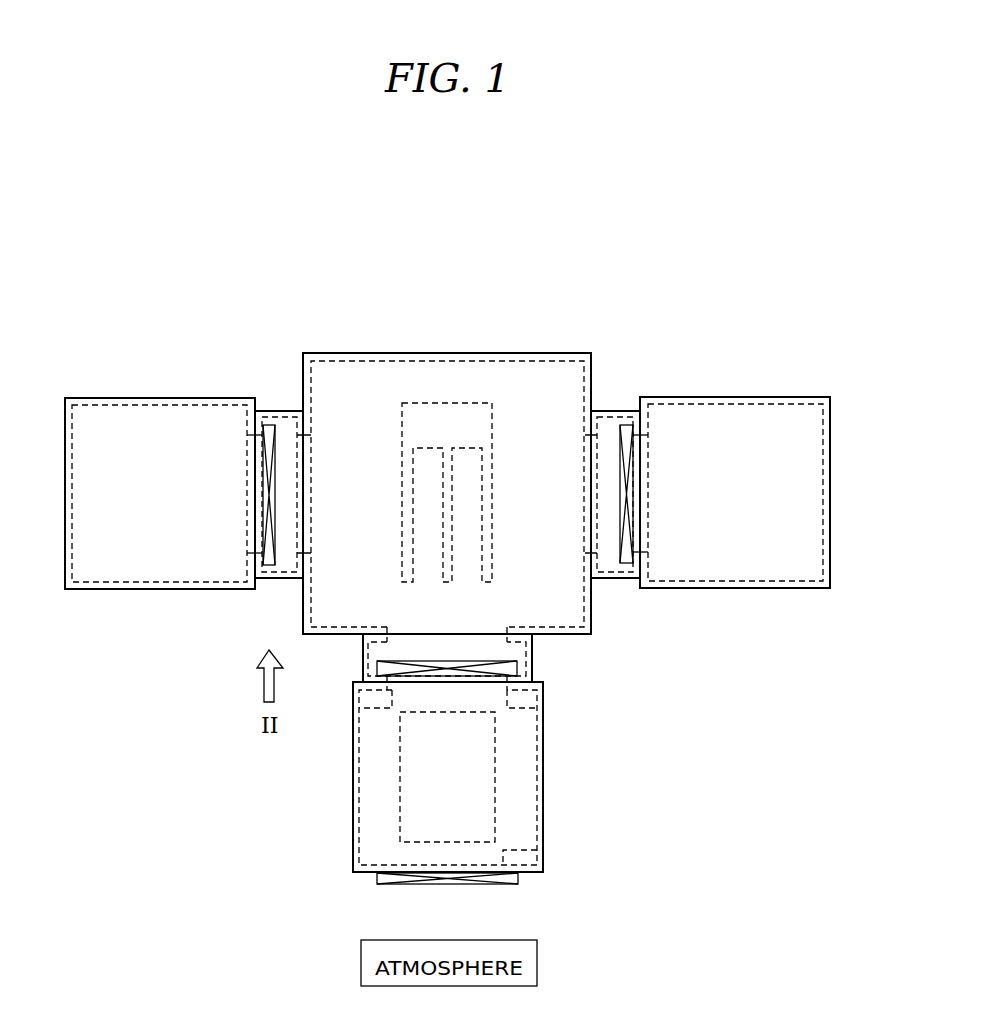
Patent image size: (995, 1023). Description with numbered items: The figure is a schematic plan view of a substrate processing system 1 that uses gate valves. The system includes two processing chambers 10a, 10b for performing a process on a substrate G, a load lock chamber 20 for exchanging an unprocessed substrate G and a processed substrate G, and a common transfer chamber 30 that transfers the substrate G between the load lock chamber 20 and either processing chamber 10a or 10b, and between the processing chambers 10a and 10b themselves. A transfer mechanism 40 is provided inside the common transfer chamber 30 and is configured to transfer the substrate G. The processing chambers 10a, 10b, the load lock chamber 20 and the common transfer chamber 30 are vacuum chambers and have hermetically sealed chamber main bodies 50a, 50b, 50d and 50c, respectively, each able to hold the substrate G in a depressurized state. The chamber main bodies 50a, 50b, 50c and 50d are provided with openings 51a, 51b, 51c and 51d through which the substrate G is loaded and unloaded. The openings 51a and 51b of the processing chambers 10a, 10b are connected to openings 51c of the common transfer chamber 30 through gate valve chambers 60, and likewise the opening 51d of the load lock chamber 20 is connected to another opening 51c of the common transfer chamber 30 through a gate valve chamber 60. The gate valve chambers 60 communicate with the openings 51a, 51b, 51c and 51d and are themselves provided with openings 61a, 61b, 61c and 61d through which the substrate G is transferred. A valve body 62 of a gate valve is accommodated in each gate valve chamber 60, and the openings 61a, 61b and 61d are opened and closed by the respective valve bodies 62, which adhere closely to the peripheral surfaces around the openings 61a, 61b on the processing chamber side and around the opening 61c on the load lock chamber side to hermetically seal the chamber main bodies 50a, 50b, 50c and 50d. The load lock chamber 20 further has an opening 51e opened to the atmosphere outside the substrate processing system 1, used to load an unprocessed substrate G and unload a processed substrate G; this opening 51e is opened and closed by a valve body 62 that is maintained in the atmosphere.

The substrate processing system 1 is at (279, 279).
The processing chamber 10a is at (163, 480).
The processing chamber 10b is at (731, 480).
The load lock chamber 20 is at (456, 774).
The common transfer chamber 30 is at (447, 458).
The transfer mechanism 40 is at (510, 416).
The chamber main body 50a is at (126, 590).
The chamber main body 50b is at (748, 589).
The chamber main body 50c is at (548, 353).
The chamber main body 50d is at (353, 836).
The opening 51a is at (247, 440).
The opening 51b is at (648, 437).
The opening 51c is at (311, 436).
The opening 51d is at (392, 703).
The opening 51e is at (545, 851).
The gate valve chamber 60 is at (276, 411).
The opening 61a is at (247, 550).
The opening 61b is at (648, 551).
The opening 61c is at (303, 549).
The opening 61d is at (508, 702).
The valve body 62 is at (269, 566).
The substrate G is at (390, 797).